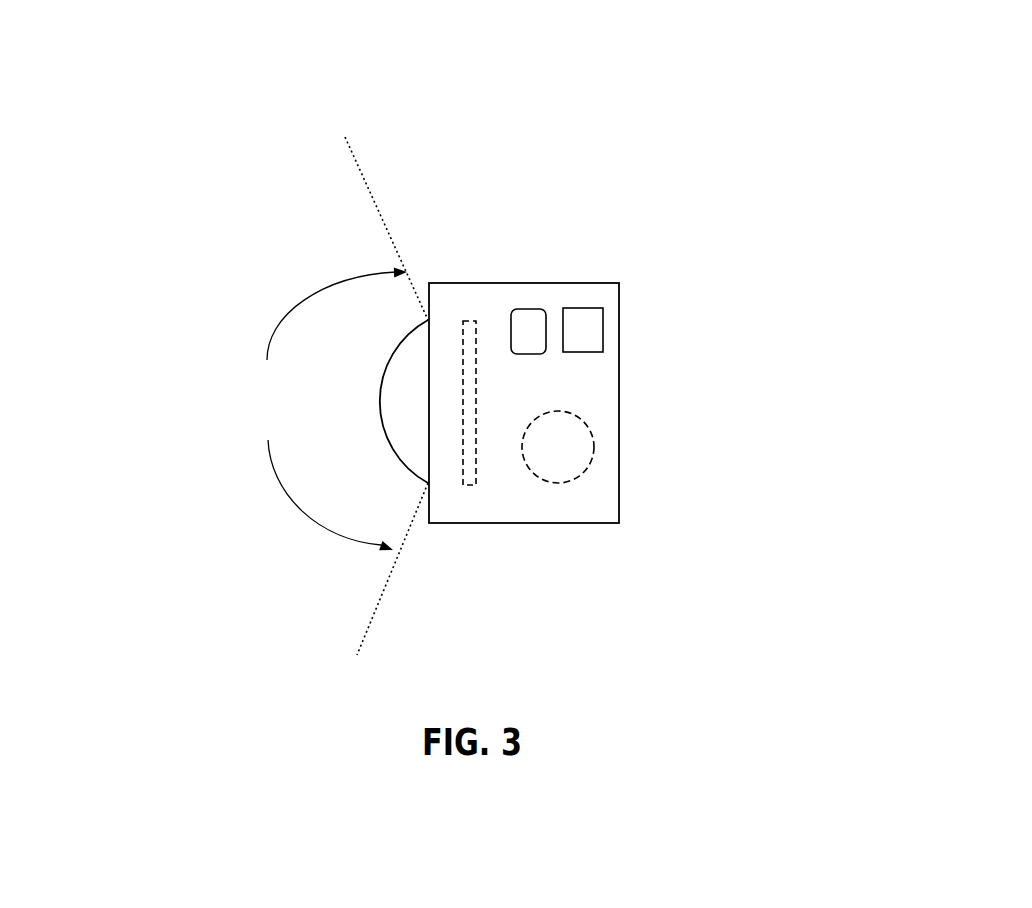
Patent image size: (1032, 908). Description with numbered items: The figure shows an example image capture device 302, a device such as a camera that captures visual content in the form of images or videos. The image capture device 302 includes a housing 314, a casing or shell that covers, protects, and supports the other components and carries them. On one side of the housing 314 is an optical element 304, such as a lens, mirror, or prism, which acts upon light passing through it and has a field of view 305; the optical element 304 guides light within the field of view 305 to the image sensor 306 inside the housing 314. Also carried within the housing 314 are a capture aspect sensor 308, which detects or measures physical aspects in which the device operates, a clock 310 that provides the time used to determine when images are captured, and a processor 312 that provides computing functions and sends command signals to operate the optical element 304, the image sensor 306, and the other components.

The image capture device 302 is at (586, 145).
The optical element 304 is at (420, 481).
The field of view 305 is at (300, 396).
The image sensor 306 is at (472, 487).
The capture aspect sensor 308 is at (603, 322).
The clock 310 is at (527, 309).
The processor 312 is at (593, 447).
The housing 314 is at (618, 524).